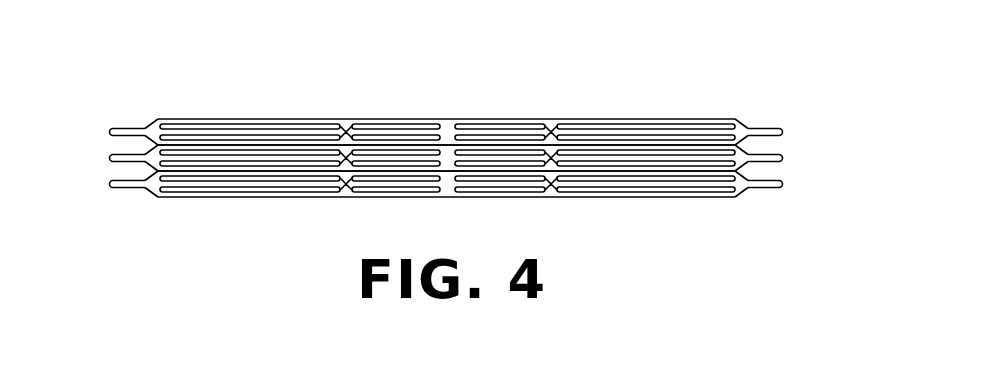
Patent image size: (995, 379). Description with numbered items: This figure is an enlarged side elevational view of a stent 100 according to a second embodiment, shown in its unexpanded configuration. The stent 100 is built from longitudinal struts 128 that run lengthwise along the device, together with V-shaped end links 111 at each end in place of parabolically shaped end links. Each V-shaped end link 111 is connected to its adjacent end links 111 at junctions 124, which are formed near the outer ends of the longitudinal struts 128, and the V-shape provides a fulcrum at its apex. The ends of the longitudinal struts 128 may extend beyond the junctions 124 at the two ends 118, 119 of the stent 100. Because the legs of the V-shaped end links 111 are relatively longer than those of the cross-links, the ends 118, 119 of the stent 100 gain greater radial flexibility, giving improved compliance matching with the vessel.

The stent 100 is at (454, 124).
The V-shaped end links 111 is at (277, 137).
The end of the stent 118 is at (100, 170).
The end of the stent 119 is at (794, 160).
The junctions 124 is at (156, 150).
The longitudinal struts 128 is at (333, 152).